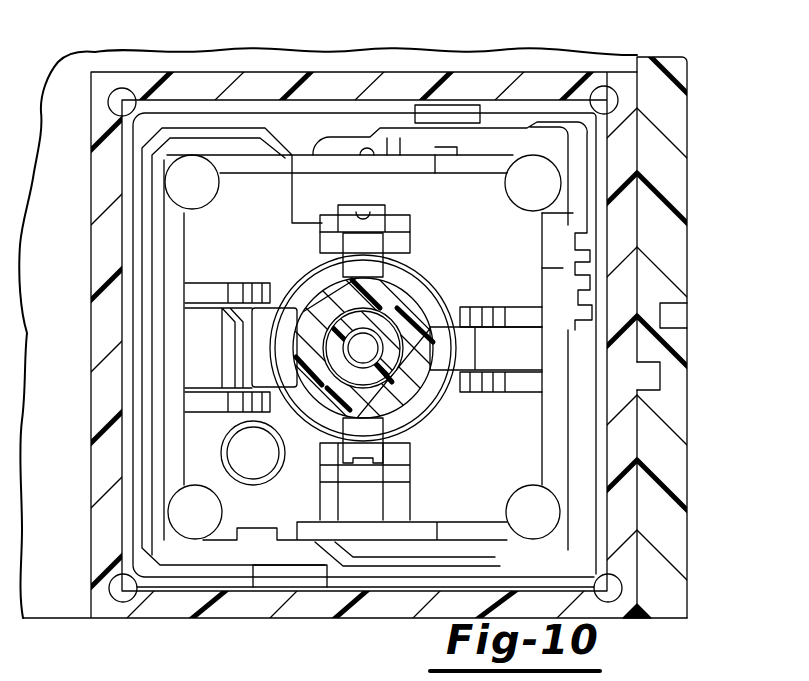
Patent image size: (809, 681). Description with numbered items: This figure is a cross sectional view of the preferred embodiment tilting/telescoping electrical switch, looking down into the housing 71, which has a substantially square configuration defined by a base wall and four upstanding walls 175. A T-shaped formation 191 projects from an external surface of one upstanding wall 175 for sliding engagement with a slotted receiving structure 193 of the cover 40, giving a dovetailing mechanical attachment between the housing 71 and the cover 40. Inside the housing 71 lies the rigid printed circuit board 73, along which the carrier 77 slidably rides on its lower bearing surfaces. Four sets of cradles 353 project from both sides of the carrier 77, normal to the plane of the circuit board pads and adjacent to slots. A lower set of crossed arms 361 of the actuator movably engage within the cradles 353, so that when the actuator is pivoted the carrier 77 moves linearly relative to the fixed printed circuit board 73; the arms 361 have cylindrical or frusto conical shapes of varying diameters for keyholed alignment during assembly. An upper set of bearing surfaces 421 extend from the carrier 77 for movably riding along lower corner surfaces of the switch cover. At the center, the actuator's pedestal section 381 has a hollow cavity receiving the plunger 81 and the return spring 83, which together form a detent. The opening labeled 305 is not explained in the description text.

The cover 40 is at (665, 167).
The housing 71 is at (620, 130).
The rigid printed circuit board 73 is at (290, 130).
The carrier 77 is at (203, 218).
The plunger 81 is at (357, 285).
The return spring 83 is at (450, 315).
The upstanding walls 175 is at (410, 90).
The T-shaped formation 191 is at (677, 372).
The slotted receiving structure 193 is at (657, 333).
The post opening 305 is at (240, 450).
The cradles 353 is at (253, 406).
The lower set of crossed arms 361 is at (263, 330).
The pedestal section 381 is at (407, 247).
The upper set of bearing surfaces 421 is at (180, 518).